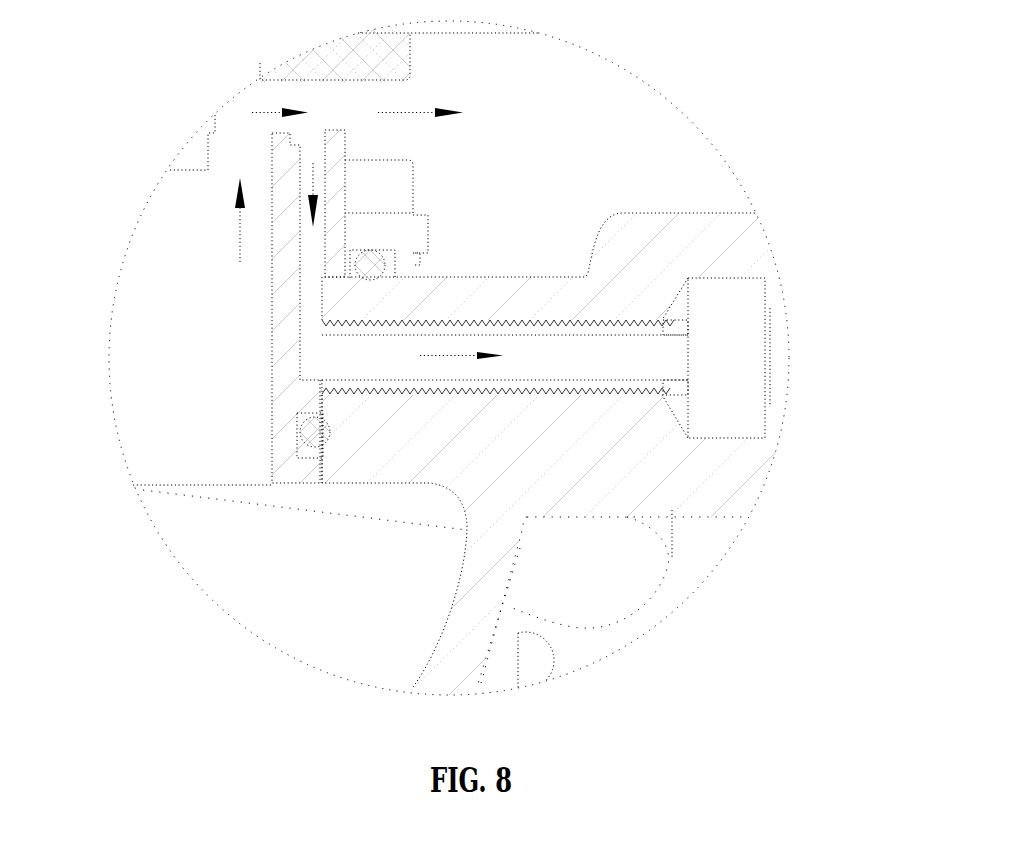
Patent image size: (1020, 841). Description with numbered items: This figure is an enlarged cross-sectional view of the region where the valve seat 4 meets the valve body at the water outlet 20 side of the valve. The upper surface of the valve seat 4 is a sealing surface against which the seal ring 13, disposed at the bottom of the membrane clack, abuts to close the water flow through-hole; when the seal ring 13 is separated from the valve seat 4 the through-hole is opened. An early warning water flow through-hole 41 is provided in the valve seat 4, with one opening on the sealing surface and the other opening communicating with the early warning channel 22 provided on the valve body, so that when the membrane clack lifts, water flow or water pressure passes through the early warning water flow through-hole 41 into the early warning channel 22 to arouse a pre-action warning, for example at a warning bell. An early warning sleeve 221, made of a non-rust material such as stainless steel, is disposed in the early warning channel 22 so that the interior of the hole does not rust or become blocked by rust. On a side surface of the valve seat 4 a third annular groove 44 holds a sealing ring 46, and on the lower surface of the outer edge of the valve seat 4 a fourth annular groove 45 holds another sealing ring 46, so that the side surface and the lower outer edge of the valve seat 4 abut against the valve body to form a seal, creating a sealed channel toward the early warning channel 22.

The valve seat 4 is at (288, 285).
The seal ring 13 is at (340, 63).
The water outlet 20 is at (612, 113).
The early warning channel 22 is at (665, 360).
The early warning sleeve 221 is at (663, 321).
The early warning water flow through-hole 41 is at (317, 190).
The third annular groove 44 is at (313, 457).
The fourth annular groove 45 is at (392, 266).
The sealing ring 46 is at (377, 253).